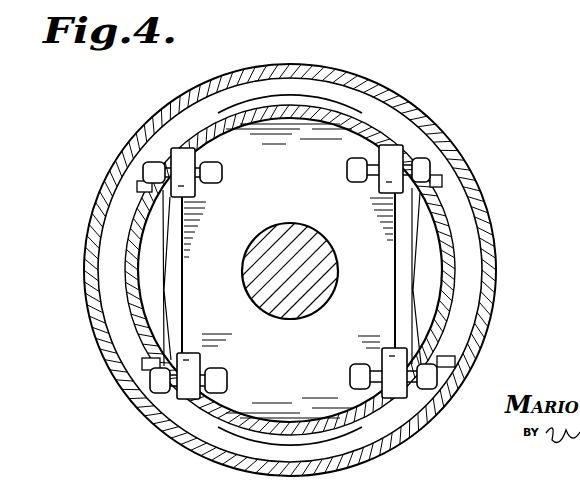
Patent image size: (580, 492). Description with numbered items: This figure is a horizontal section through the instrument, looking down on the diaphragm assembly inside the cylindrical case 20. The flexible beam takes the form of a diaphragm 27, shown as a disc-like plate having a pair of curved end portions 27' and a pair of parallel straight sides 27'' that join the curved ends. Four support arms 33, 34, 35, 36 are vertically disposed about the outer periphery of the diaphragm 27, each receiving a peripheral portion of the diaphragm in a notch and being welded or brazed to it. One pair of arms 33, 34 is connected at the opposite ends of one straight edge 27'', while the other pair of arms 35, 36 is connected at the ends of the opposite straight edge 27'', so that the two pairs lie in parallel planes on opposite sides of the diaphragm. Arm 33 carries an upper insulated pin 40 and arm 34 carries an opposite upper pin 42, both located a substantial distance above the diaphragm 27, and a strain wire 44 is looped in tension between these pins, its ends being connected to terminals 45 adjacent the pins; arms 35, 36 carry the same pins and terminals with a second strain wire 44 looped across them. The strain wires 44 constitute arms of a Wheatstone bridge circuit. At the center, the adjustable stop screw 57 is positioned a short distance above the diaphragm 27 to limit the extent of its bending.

The cylindrical case 20 is at (84, 234).
The diaphragm 27 is at (290, 270).
The curved end portions 27' is at (290, 270).
The straight sides 27'' is at (291, 273).
The support arm 33 is at (405, 398).
The support arm 34 is at (390, 145).
The support arm 35 is at (181, 147).
The support arm 36 is at (185, 400).
The upper insulated pin 40 is at (137, 186).
The upper insulated pin 42 is at (442, 181).
The strain wire 44 is at (168, 290).
The terminals 45 is at (143, 168).
The adjustable stop screw 57 is at (274, 223).